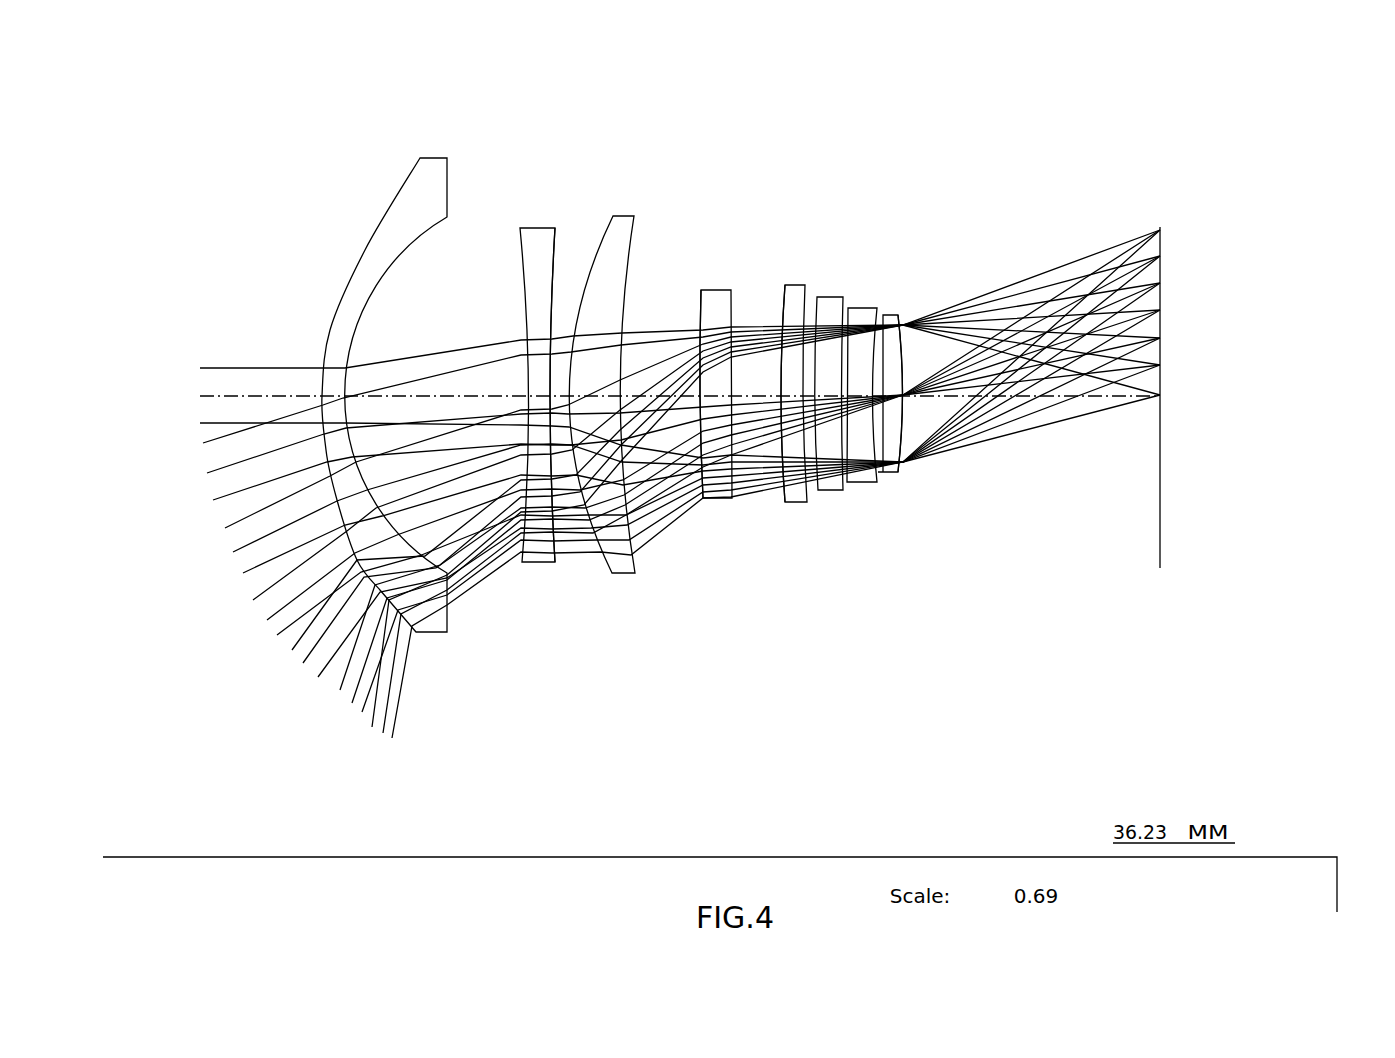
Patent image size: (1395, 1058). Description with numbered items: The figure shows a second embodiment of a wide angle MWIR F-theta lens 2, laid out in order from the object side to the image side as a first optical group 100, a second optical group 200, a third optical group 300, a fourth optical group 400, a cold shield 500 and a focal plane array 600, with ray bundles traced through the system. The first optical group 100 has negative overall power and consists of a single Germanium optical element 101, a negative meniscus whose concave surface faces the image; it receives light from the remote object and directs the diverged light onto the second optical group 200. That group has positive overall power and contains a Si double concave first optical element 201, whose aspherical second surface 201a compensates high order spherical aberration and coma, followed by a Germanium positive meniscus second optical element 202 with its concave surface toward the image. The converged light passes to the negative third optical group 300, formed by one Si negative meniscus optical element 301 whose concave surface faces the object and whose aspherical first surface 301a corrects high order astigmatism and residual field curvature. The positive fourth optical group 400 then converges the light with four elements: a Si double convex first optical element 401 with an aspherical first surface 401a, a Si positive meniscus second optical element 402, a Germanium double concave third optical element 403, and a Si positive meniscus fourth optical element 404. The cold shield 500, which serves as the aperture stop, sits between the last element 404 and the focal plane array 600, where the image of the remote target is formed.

The wide angle MWIR F-theta lens 2 is at (215, 134).
The first optical group 100 is at (350, 162).
The optical element 101 is at (433, 634).
The second optical group 200 is at (610, 162).
The first optical element of the second optical group 201 is at (537, 563).
The second surface 201a is at (565, 257).
The second optical element of the second optical group 202 is at (625, 574).
The third optical group 300 is at (665, 143).
The optical element 301 is at (715, 499).
The first surface 301a is at (704, 308).
The fourth optical group 400 is at (765, 158).
The first optical element of the fourth optical group 401 is at (795, 505).
The first surface 401a is at (780, 295).
The second optical element of the fourth optical group 402 is at (830, 492).
The third optical element of the fourth optical group 403 is at (862, 483).
The fourth optical element of the fourth optical group 404 is at (899, 483).
The cold shield 500 is at (915, 306).
The focal plane array 600 is at (1160, 568).